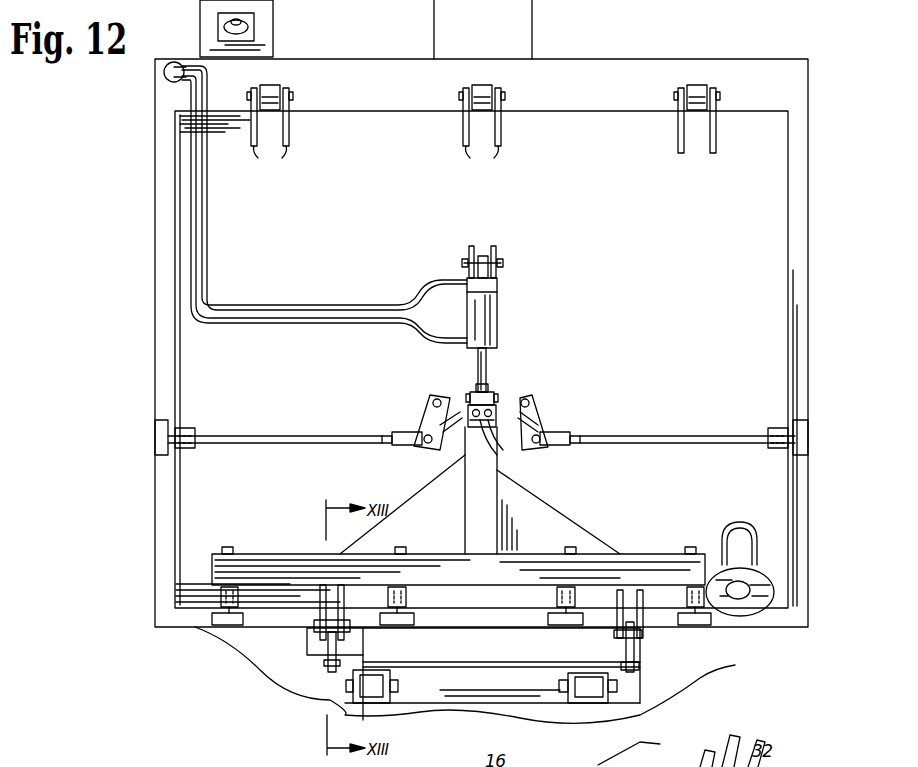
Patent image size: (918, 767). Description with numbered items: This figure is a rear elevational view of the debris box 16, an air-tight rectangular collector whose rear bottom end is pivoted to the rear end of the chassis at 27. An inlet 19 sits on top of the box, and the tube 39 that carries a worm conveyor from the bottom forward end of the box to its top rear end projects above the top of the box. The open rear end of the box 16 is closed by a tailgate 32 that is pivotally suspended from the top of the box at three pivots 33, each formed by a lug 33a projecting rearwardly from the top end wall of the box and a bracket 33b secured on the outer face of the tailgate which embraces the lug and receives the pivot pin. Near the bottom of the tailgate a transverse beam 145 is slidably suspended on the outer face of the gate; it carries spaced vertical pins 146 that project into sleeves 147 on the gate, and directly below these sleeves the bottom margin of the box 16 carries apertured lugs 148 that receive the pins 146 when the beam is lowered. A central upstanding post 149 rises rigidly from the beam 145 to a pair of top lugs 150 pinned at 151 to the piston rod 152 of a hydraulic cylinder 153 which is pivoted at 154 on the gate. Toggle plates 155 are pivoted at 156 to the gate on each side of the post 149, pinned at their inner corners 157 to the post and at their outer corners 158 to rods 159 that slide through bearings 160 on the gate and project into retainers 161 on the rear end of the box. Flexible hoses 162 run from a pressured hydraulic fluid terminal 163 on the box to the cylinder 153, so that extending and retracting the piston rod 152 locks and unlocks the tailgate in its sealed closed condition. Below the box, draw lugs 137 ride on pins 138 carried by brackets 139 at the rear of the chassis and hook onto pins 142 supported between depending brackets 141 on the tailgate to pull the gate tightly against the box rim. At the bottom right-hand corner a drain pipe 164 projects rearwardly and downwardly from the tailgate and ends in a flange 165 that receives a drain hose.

The debris box 16 is at (618, 50).
The inlet 19 is at (522, 20).
The pivot 27 is at (340, 688).
The tailgate 32 is at (650, 270).
The pivots 33 is at (293, 96).
The lugs 33a is at (272, 90).
The brackets 33b is at (377, 174).
The tube 39 is at (258, 15).
The draw lugs 137 is at (326, 664).
The pins 138 is at (640, 672).
The brackets 139 is at (642, 650).
The depending brackets 141 is at (318, 618).
The pins 142 is at (630, 590).
The transverse beam 145 is at (285, 556).
The vertical pins 146 is at (227, 546).
The sleeves 147 is at (405, 596).
The apertured lugs 148 is at (220, 622).
The central upstanding post 149 is at (468, 476).
The top lugs 150 is at (446, 364).
The pivot pin 151 is at (496, 402).
The piston rod 152 is at (470, 376).
The hydraulic cylinder 153 is at (498, 322).
The pivot 154 is at (500, 262).
The toggle plates 155 is at (428, 412).
The pivots 156 is at (444, 400).
The inner corner pins 157 is at (490, 440).
The outer corner pins 158 is at (428, 445).
The rods 159 is at (265, 432).
The bearings 160 is at (205, 426).
The retainers 161 is at (156, 450).
The flexible hoses 162 is at (295, 322).
The hydraulic fluid terminal 163 is at (165, 82).
The drain pipe 164 is at (758, 560).
The flange 165 is at (760, 610).